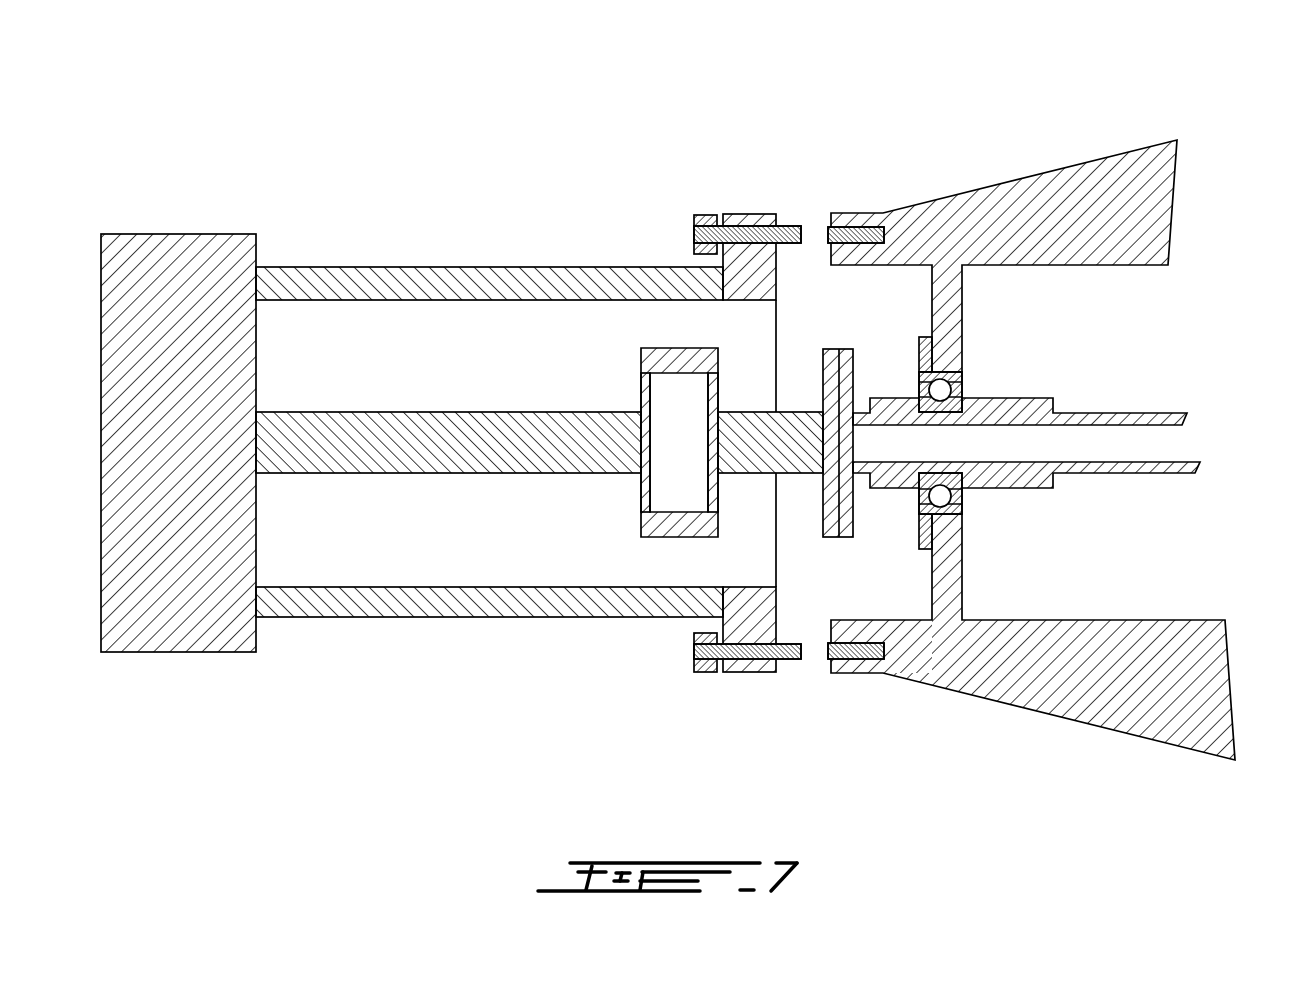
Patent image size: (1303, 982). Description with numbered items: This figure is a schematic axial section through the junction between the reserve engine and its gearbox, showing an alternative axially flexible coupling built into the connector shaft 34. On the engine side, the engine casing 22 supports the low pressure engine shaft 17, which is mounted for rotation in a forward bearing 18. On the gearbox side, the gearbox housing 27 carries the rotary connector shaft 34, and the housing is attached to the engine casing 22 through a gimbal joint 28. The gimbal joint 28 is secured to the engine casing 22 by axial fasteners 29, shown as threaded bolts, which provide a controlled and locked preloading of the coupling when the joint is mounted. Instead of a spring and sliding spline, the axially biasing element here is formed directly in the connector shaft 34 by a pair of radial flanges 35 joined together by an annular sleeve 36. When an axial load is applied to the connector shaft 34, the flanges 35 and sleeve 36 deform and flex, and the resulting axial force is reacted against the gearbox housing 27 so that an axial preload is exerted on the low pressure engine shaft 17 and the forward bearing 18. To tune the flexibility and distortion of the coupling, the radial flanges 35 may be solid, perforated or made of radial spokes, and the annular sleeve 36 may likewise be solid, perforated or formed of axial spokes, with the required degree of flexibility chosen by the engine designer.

The low pressure engine shaft 17 is at (1098, 413).
The forward bearing 18 is at (962, 373).
The engine casing 22 is at (1088, 162).
The gearbox housing 27 is at (180, 234).
The gimbal joint 28 is at (371, 267).
The axial fasteners 29 is at (790, 660).
The connector shaft 34 is at (458, 412).
The radial flanges 35 is at (718, 385).
The annular sleeve 36 is at (680, 348).